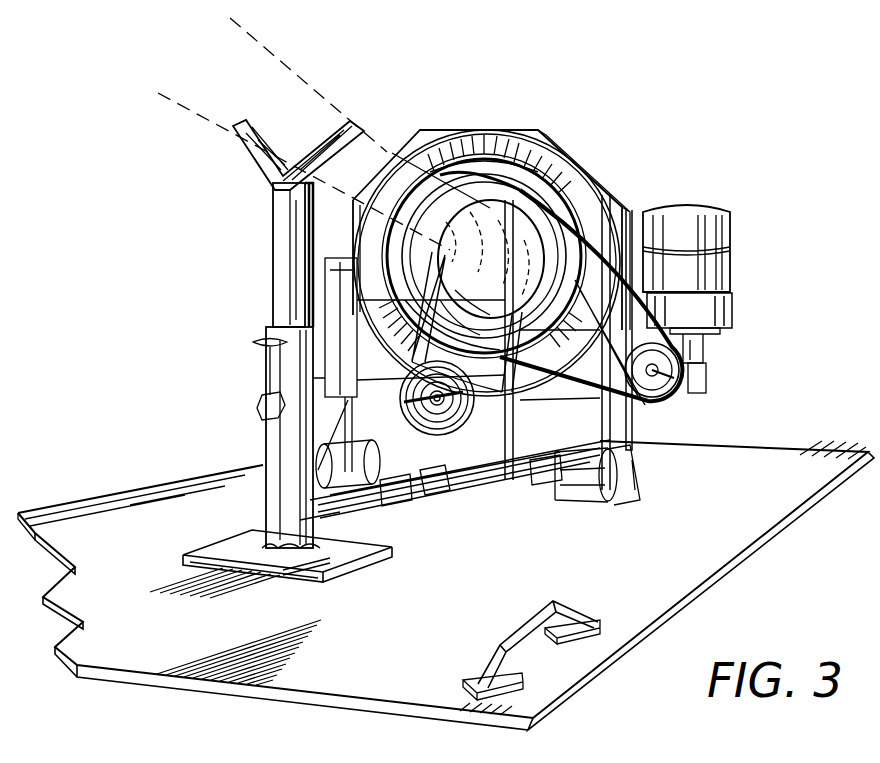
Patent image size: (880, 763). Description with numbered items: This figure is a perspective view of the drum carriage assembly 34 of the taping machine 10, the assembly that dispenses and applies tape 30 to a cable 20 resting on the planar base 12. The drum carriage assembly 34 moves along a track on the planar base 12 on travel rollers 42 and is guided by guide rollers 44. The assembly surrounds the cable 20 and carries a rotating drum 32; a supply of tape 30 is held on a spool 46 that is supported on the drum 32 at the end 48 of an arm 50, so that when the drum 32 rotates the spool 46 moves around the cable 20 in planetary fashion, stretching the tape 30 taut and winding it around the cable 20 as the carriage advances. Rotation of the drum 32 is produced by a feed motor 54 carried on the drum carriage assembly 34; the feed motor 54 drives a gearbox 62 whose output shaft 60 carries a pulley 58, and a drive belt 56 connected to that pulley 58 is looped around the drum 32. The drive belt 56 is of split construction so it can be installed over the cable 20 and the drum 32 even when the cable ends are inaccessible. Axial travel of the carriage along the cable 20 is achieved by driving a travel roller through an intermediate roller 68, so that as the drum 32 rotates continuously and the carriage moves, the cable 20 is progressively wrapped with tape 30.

The taping machine 10 is at (245, 287).
The planar base 12 is at (768, 548).
The cable 20 is at (286, 68).
The tape 30 is at (487, 483).
The rotating drum 32 is at (433, 163).
The drum carriage assembly 34 is at (560, 150).
The travel rollers 42 is at (337, 463).
The guide rollers 44 is at (495, 483).
The spool 46 is at (423, 477).
The end of arm 48 is at (400, 478).
The arm 50 is at (537, 473).
The feed motor 54 is at (730, 246).
The drive belt 56 is at (600, 198).
The pulley 58 is at (695, 372).
The output shaft 60 is at (663, 402).
The gearbox 62 is at (706, 382).
The intermediate roller 68 is at (313, 380).